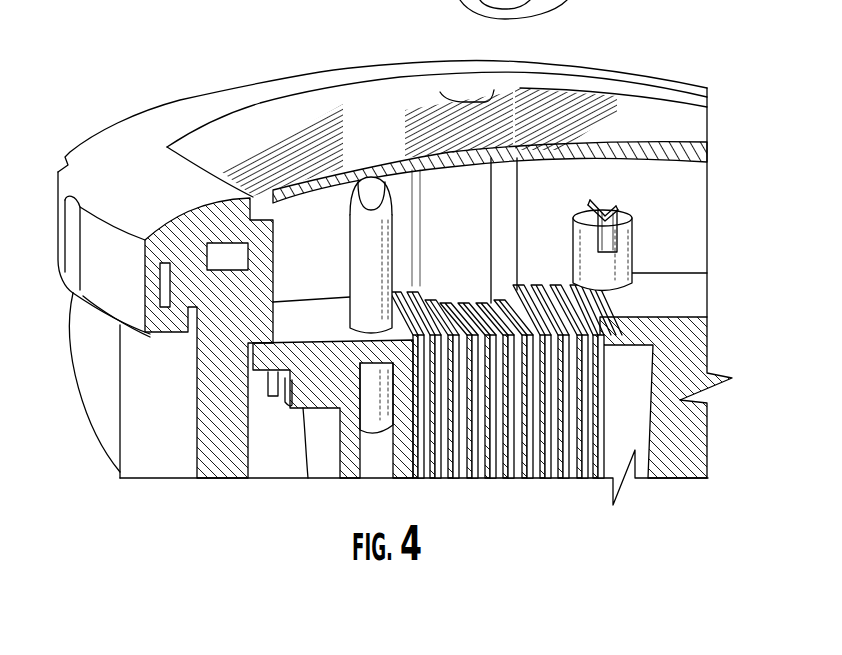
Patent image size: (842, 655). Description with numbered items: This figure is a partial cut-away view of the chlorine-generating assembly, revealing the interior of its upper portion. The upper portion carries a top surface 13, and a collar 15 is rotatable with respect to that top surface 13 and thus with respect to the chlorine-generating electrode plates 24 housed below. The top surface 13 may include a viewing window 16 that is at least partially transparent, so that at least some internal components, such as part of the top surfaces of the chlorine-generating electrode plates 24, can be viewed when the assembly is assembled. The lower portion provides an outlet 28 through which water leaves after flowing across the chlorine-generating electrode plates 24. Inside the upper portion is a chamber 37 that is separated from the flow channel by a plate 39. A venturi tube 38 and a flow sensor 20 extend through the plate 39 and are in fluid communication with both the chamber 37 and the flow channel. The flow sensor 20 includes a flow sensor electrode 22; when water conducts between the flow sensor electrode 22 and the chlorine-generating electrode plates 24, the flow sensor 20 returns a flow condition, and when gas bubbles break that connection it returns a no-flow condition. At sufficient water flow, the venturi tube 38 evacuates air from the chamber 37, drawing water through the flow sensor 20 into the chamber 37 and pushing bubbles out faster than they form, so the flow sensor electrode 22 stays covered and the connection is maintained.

The top surface 13 is at (212, 123).
The collar 15 is at (107, 163).
The viewing window 16 is at (352, 137).
The flow sensor 20 is at (620, 263).
The flow sensor electrode 22 is at (625, 205).
The chlorine-generating electrode plates 24 is at (590, 432).
The outlet 28 is at (652, 0).
The chamber 37 is at (530, 208).
The venturi tube 38 is at (362, 210).
The plate 39 is at (657, 297).